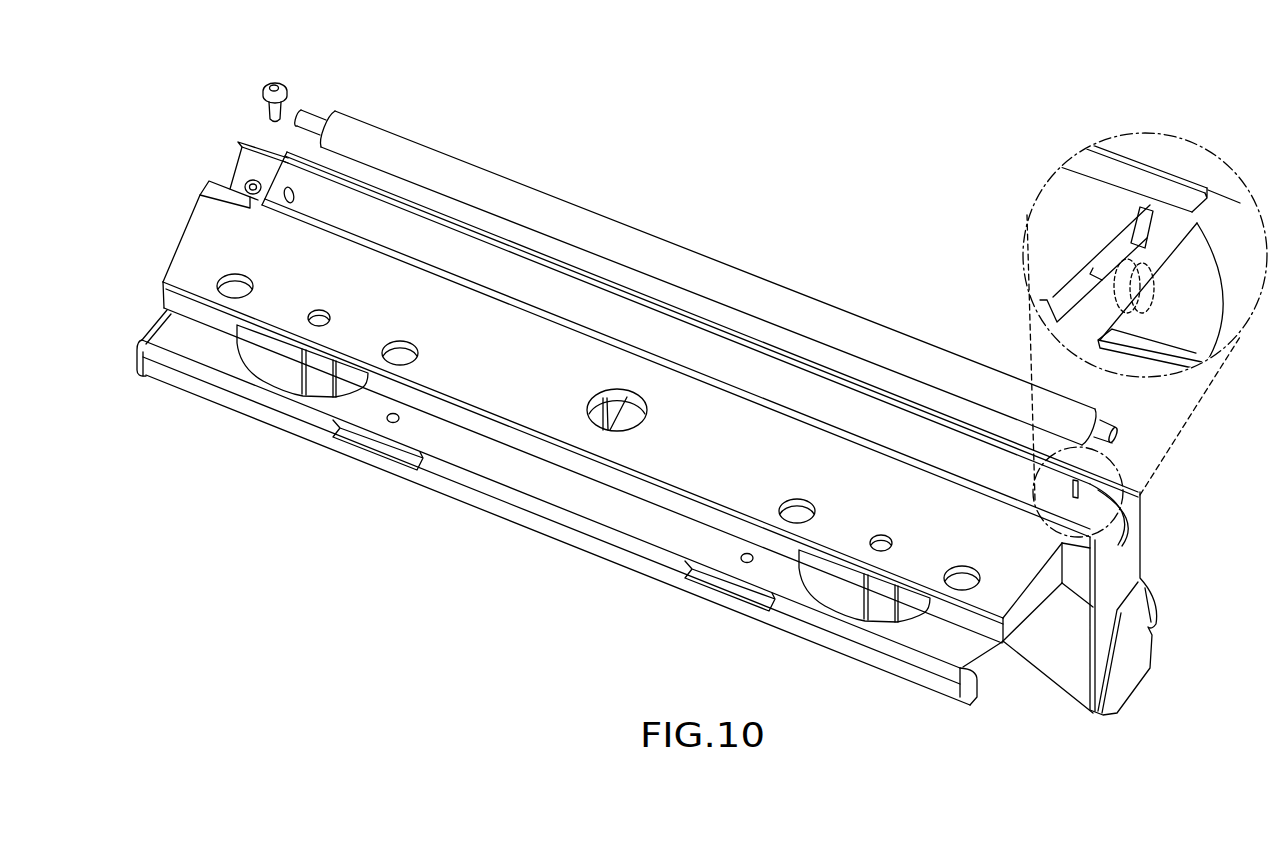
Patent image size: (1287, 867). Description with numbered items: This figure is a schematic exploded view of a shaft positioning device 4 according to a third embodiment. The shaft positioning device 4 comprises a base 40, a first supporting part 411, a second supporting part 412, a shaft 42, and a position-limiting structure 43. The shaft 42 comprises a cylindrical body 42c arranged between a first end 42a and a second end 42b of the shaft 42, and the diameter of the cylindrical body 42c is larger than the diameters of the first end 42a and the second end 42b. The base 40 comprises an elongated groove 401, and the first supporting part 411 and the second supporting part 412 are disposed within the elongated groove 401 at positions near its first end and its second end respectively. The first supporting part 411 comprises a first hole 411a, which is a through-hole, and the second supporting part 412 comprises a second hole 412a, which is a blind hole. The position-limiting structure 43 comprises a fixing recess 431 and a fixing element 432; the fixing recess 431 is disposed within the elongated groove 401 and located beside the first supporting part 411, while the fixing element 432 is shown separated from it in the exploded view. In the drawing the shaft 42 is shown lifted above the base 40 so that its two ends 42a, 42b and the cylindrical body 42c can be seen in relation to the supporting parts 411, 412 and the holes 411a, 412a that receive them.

The shaft positioning device 4 is at (592, 112).
The base 40 is at (683, 470).
The elongated groove 401 is at (578, 312).
The first supporting part 411 is at (267, 197).
The first hole 411a is at (302, 197).
The second supporting part 412 is at (1122, 525).
The second hole 412a is at (1153, 292).
The shaft 42 is at (822, 283).
The first end 42a is at (320, 112).
The second end 42b is at (1110, 426).
The cylindrical body 42c is at (893, 347).
The position-limiting structure 43 is at (181, 62).
The fixing recess 431 is at (247, 179).
The fixing element 432 is at (263, 80).